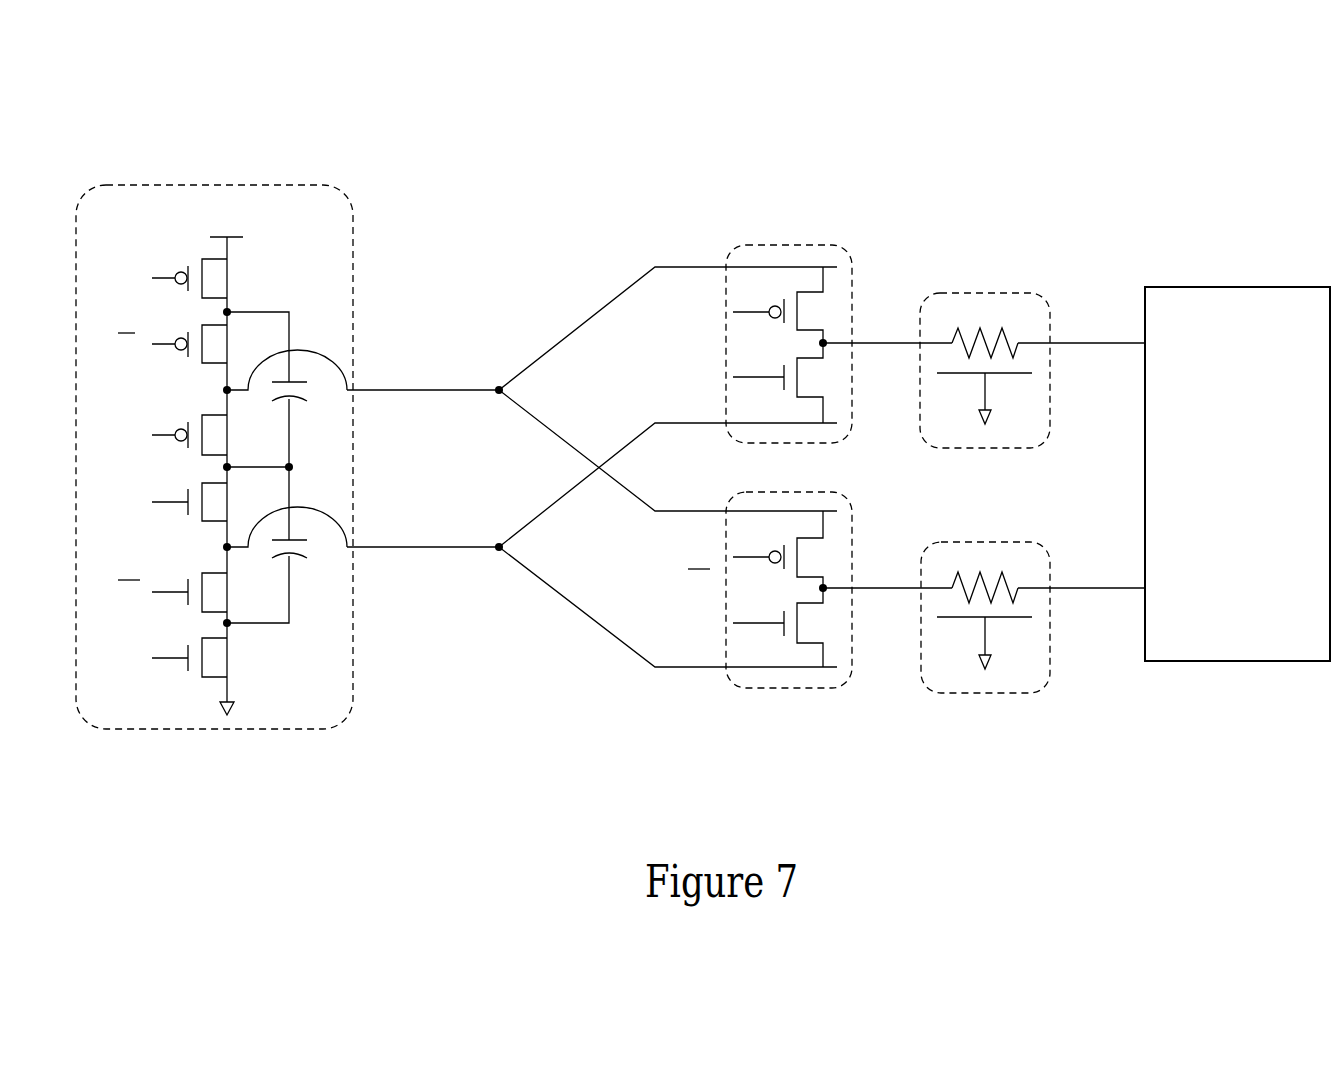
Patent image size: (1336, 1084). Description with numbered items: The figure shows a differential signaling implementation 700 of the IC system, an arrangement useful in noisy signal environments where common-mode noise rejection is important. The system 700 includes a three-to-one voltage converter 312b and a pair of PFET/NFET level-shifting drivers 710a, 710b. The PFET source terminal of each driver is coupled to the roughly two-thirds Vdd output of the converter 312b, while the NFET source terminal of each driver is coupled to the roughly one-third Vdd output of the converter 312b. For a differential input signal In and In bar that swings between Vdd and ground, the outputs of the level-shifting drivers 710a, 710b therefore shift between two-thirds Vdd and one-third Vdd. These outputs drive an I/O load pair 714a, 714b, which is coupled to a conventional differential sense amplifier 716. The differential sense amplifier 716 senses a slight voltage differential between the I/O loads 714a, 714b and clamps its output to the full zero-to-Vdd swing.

The differential signaling implementation 700 is at (150, 61).
The converter 312b is at (122, 192).
The level-shifting driver 710a is at (742, 249).
The level-shifting driver 710b is at (742, 678).
The I/O load 714a is at (950, 437).
The I/O load 714b is at (942, 682).
The differential sense amplifier 716 is at (1244, 300).